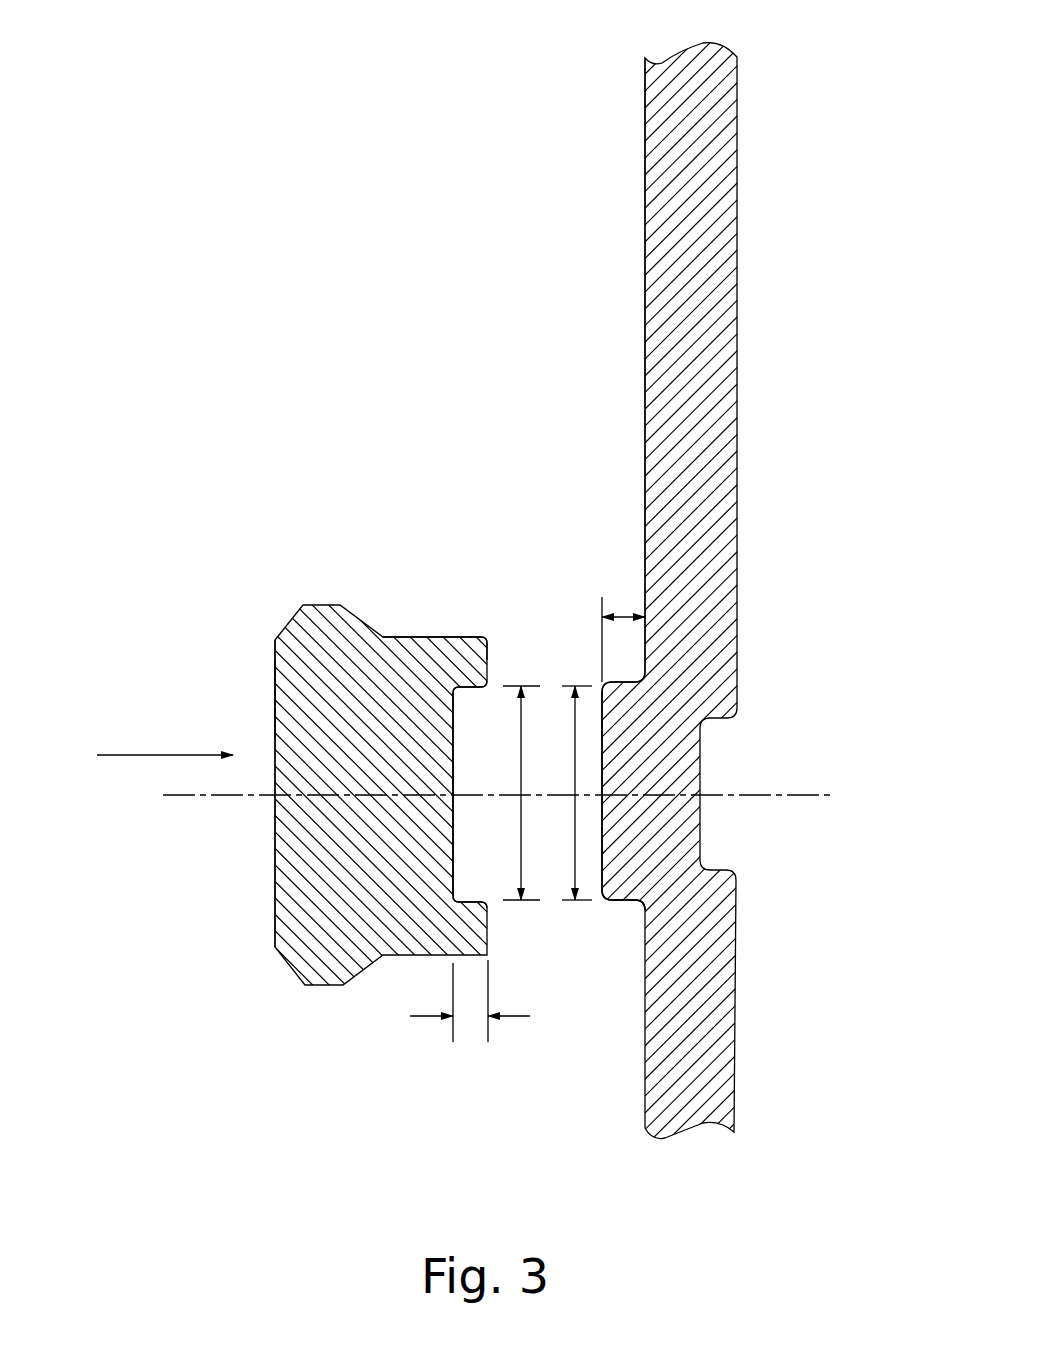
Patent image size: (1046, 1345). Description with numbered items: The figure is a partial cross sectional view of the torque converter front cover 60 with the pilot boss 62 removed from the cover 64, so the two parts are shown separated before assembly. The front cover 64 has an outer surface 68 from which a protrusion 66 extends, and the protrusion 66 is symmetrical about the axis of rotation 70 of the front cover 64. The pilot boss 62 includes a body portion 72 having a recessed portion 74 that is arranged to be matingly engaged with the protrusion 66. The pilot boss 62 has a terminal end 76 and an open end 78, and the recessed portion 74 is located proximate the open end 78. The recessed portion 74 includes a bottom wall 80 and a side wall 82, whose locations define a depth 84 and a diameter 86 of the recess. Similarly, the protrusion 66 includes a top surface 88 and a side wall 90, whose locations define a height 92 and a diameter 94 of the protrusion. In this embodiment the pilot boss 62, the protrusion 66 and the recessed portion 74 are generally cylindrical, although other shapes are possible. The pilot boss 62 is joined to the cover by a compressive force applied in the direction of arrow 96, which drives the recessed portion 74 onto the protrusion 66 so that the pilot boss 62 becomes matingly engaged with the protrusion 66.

The torque converter front cover 60 is at (460, 153).
The pilot boss 62 is at (312, 630).
The front cover 64 is at (717, 187).
The protrusion 66 is at (622, 730).
The outer surface 68 is at (643, 212).
The axis of rotation 70 is at (213, 797).
The body portion 72 is at (422, 630).
The recessed portion 74 is at (472, 730).
The terminal end 76 is at (275, 890).
The open end 78 is at (490, 645).
The bottom wall 80 is at (452, 848).
The side wall 82 is at (465, 690).
The depth 84 is at (410, 1017).
The diameter 86 is at (522, 793).
The top surface 88 is at (601, 875).
The side wall 90 is at (622, 905).
The height 92 is at (625, 613).
The diameter 94 is at (574, 793).
The arrow 96 is at (148, 755).